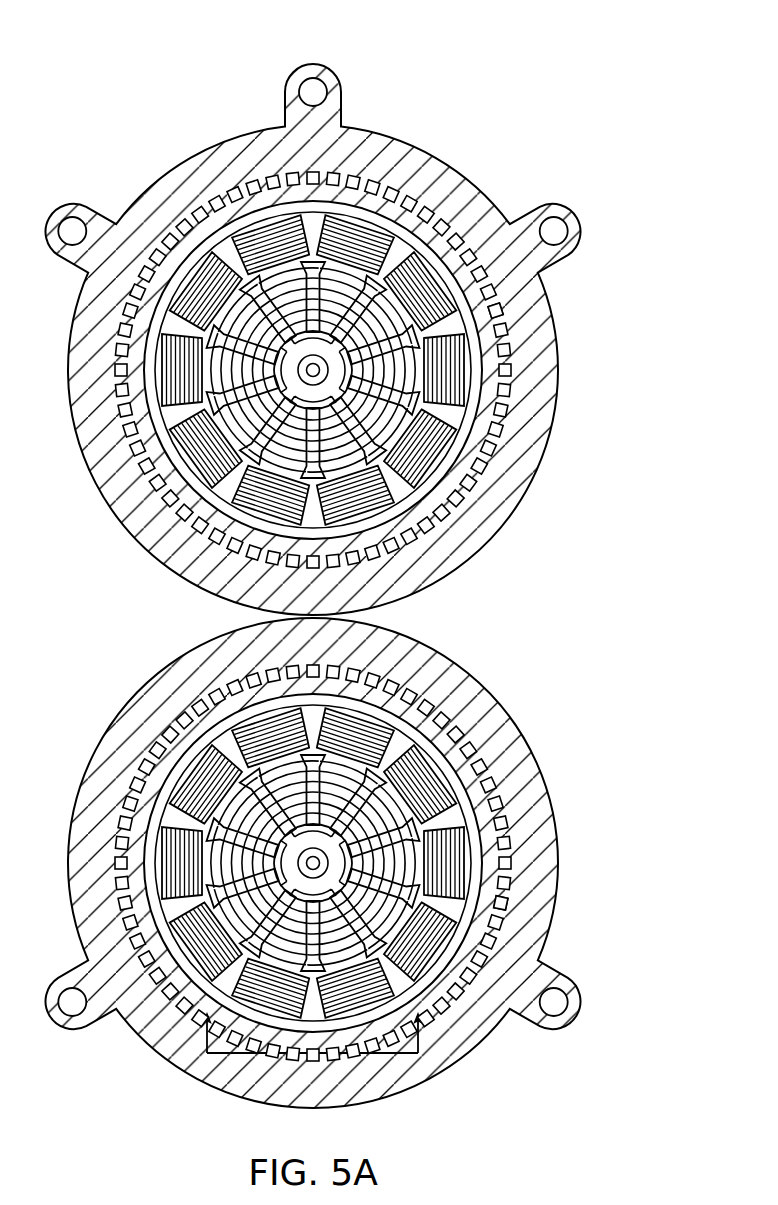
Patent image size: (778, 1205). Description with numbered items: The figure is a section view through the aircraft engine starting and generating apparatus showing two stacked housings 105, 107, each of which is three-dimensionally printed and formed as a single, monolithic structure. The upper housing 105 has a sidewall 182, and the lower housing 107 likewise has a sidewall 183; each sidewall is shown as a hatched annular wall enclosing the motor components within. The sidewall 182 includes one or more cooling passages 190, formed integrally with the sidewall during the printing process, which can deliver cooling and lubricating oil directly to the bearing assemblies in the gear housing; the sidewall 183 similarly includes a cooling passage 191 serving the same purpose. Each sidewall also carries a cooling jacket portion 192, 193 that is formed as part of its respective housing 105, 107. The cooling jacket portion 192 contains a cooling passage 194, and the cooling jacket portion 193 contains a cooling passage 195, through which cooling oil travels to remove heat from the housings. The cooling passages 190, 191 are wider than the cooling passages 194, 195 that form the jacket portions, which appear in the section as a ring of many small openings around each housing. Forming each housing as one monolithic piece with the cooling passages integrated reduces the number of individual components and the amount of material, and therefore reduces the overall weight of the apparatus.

The housing 105 is at (362, 322).
The housing 107 is at (361, 860).
The sidewall 182 is at (435, 170).
The sidewall 183 is at (435, 665).
The cooling passage 190 is at (320, 80).
The cooling passage 191 is at (555, 1003).
The cooling jacket portion 192 is at (468, 232).
The cooling jacket portion 193 is at (468, 727).
The cooling passage 194 is at (506, 432).
The cooling passage 195 is at (504, 903).